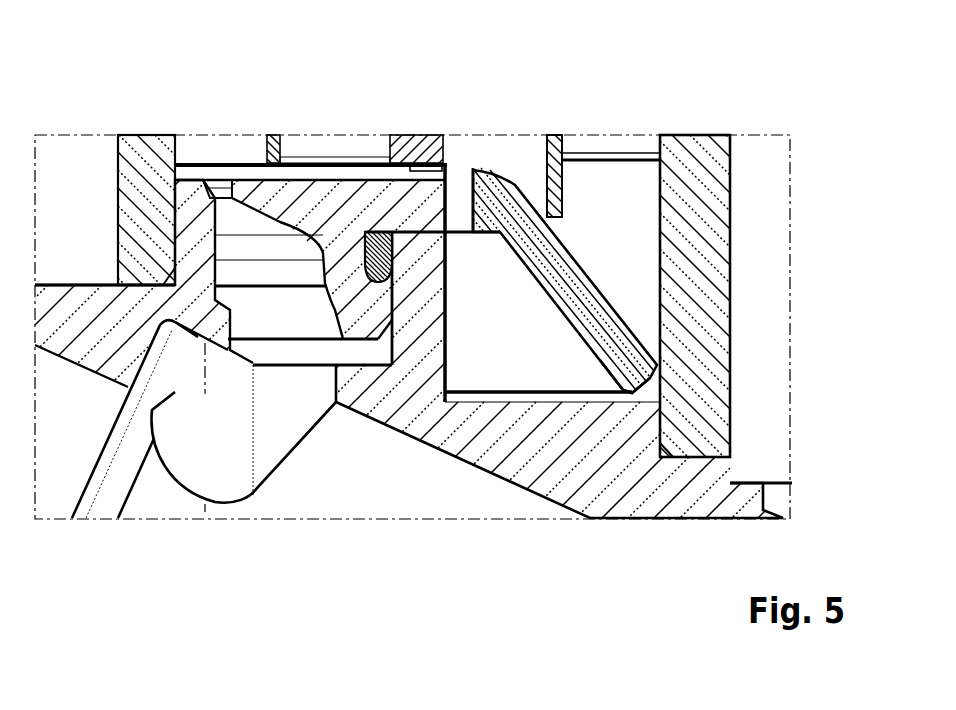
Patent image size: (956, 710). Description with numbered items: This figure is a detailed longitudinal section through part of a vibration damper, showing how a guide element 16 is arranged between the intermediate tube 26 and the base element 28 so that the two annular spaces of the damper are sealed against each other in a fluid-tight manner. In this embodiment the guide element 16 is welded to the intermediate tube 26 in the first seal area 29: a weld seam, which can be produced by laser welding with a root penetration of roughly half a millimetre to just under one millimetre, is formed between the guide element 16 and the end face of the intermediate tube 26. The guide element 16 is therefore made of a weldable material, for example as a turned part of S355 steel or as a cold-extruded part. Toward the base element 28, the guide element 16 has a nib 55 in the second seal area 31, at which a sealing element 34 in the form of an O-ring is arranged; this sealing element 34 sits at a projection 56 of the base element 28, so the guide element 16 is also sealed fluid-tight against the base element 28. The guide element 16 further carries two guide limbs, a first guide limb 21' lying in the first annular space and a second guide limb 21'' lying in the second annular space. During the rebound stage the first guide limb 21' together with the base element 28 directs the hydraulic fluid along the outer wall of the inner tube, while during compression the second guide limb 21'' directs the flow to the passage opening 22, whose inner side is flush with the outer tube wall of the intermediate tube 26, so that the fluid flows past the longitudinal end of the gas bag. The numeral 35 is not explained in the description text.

The guide element 16 is at (570, 272).
The first guide limb 21' is at (234, 137).
The second guide limb 21'' is at (732, 361).
The passage opening 22 is at (463, 192).
The intermediate tube 26 is at (442, 167).
The base element 28 is at (380, 397).
The first seal area 29 is at (413, 163).
The second seal area 31 is at (458, 165).
The sealing element 34 is at (368, 236).
The partition wall 35 is at (430, 232).
The nib 55 is at (340, 298).
The projection 56 is at (420, 262).